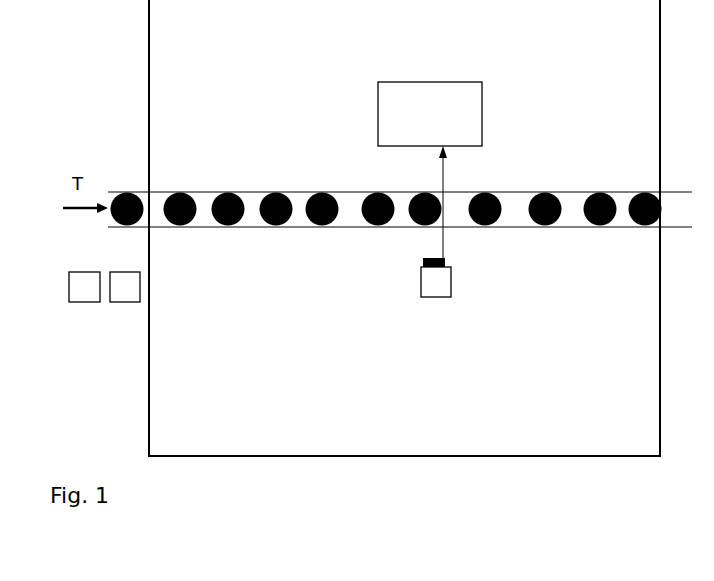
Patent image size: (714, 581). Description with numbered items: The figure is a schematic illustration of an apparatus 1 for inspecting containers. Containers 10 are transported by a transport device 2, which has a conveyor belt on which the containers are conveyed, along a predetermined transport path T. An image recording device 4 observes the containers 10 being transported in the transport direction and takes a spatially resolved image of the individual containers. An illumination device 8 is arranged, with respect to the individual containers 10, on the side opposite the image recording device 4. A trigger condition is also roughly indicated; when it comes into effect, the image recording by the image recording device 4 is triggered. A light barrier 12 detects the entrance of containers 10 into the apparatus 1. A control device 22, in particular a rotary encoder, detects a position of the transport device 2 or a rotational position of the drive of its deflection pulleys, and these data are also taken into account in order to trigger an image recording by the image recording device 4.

The apparatus 1 is at (251, 456).
The transport device 2 is at (138, 192).
The image recording device 4 is at (437, 297).
The illumination device 8 is at (418, 82).
The containers 10 is at (230, 227).
The light barrier 12 is at (127, 302).
The control device 22 is at (85, 302).